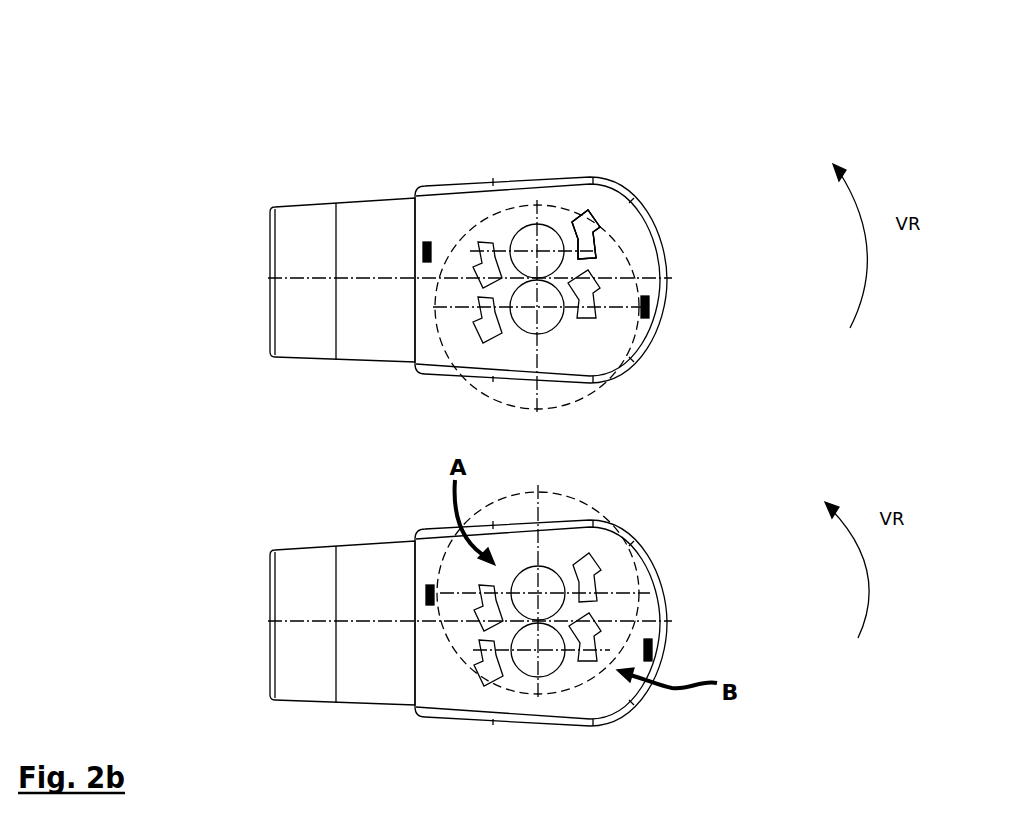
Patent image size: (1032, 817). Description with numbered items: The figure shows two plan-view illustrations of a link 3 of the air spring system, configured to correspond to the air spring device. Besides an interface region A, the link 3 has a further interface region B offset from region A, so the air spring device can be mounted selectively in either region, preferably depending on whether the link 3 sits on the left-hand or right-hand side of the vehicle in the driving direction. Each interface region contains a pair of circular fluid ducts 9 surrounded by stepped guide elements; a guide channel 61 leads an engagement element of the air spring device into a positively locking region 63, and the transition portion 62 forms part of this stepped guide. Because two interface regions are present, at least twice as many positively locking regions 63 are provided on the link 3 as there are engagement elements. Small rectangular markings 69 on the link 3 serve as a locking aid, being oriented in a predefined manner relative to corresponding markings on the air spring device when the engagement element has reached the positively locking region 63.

The link 3 is at (258, 512).
The fluid duct 9 is at (520, 238).
The guide channel 61 is at (574, 221).
The guide element tip 62 is at (589, 211).
The positively locking region 63 is at (599, 246).
The marking 69 is at (423, 248).